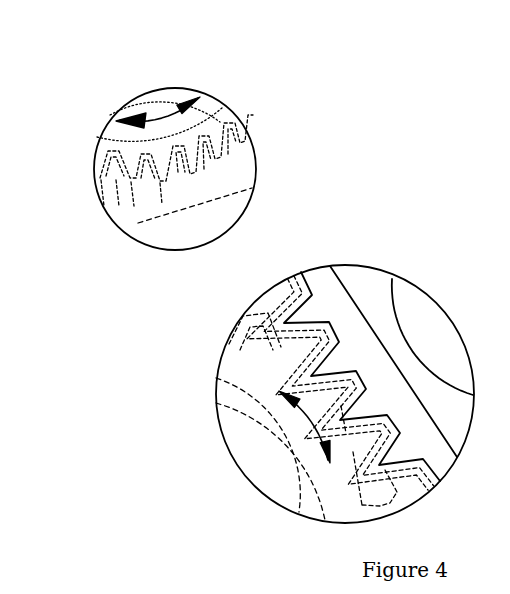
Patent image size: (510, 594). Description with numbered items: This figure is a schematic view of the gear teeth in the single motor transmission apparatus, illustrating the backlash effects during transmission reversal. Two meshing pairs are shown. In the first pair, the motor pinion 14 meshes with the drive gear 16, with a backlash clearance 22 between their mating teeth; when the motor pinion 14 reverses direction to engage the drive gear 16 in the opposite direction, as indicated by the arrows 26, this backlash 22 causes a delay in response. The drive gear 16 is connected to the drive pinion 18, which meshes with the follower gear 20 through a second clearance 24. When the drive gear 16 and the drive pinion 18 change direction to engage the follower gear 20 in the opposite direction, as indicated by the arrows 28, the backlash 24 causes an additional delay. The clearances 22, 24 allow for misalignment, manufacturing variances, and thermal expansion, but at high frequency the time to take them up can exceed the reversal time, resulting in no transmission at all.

The motor pinion 14 is at (103, 146).
The drive gear 16 is at (120, 226).
The drive pinion 18 is at (228, 434).
The follower gear 20 is at (322, 278).
The clearance (backlash) 22 is at (102, 186).
The clearance (backlash) 24 is at (277, 318).
The arrows 26 is at (165, 120).
The arrows 28 is at (312, 422).